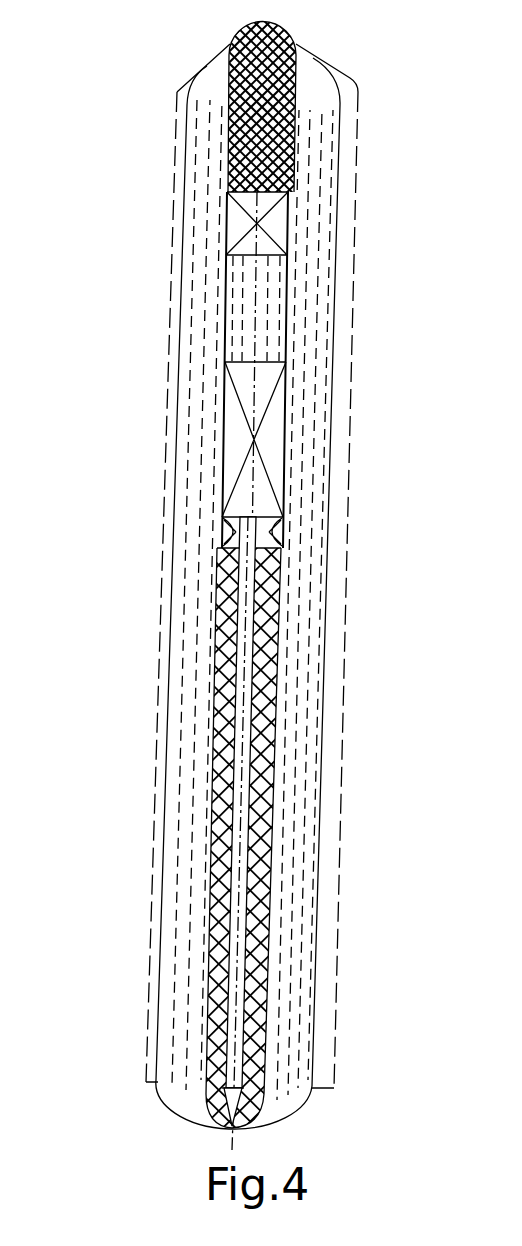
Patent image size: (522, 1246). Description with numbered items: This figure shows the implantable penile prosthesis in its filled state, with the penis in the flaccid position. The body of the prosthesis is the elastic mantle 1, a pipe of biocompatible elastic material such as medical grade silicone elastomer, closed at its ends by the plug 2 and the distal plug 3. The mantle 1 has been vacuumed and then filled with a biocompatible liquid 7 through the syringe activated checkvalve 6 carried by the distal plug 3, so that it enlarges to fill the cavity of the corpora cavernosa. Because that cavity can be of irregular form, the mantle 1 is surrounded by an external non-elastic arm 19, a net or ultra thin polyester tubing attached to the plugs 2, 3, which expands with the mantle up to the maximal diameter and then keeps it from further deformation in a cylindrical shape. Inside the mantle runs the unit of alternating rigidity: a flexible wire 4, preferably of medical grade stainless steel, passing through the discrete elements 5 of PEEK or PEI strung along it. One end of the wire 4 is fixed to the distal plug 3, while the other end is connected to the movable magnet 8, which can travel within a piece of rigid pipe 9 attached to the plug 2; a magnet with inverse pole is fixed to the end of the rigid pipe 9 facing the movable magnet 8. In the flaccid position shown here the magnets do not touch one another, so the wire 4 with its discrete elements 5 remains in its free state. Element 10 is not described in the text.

The elastic mantle 1 is at (175, 462).
The external non-elastic arm 19 is at (172, 210).
The biocompatible liquid 7 is at (313, 617).
The plug 2 is at (287, 150).
The rigid pipe 9 is at (222, 310).
The upper spacer 10 is at (266, 199).
The movable magnet 8 is at (268, 447).
The discrete elements 5 is at (273, 810).
The distal plug 3 is at (265, 1045).
The flexible wire 4 is at (237, 947).
The syringe activated checkvalve 6 is at (221, 1101).